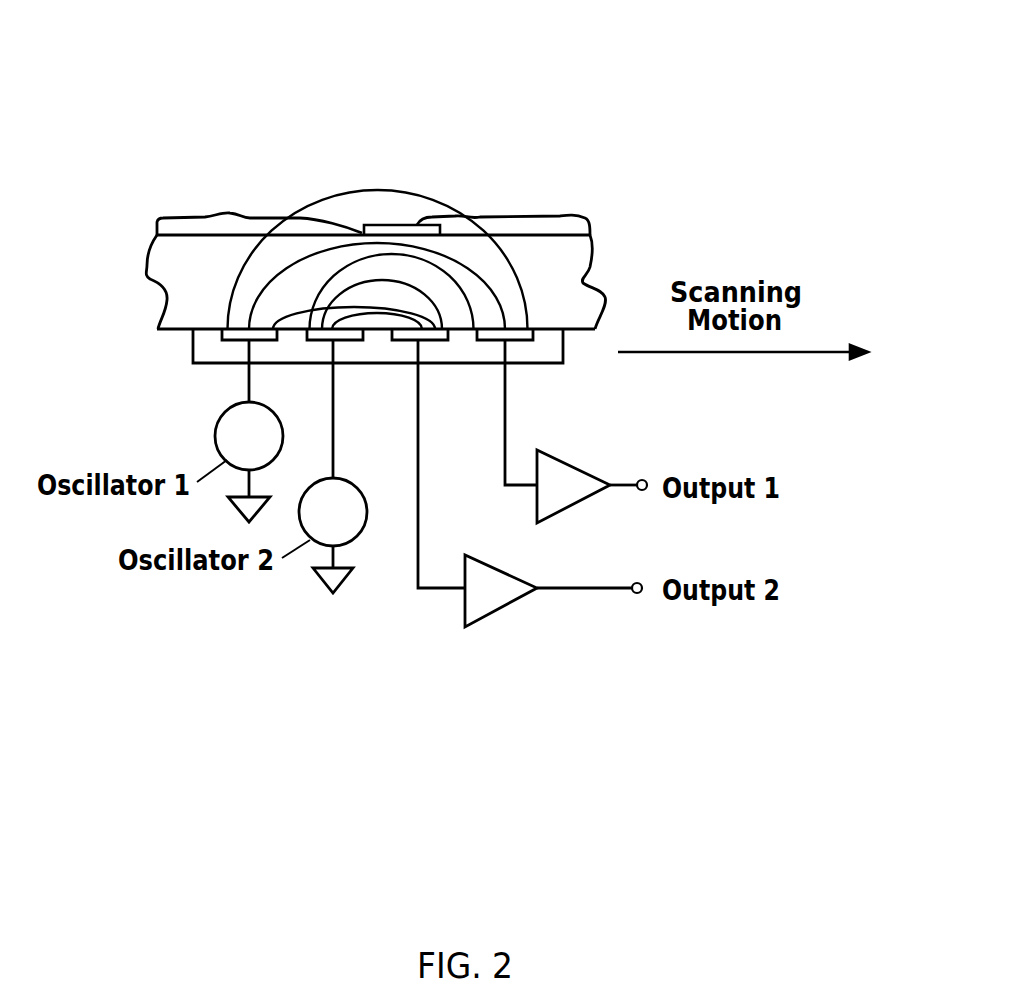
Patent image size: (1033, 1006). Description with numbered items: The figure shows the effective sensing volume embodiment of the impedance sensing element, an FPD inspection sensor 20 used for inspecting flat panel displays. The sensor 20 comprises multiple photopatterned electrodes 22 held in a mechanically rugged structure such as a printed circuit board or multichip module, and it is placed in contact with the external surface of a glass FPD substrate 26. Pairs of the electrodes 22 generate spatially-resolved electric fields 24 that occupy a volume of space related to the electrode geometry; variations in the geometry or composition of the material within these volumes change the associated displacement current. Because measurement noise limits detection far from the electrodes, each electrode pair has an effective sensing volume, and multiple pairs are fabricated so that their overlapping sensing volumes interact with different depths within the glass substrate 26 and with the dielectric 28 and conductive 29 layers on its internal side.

The FPD inspection sensor 20 is at (549, 137).
The photopatterned electrodes 22 is at (230, 340).
The electric fields 24 is at (357, 247).
The glass FPD substrate 26 is at (157, 272).
The dielectric layer 28 is at (223, 225).
The conductive layer 29 is at (392, 225).